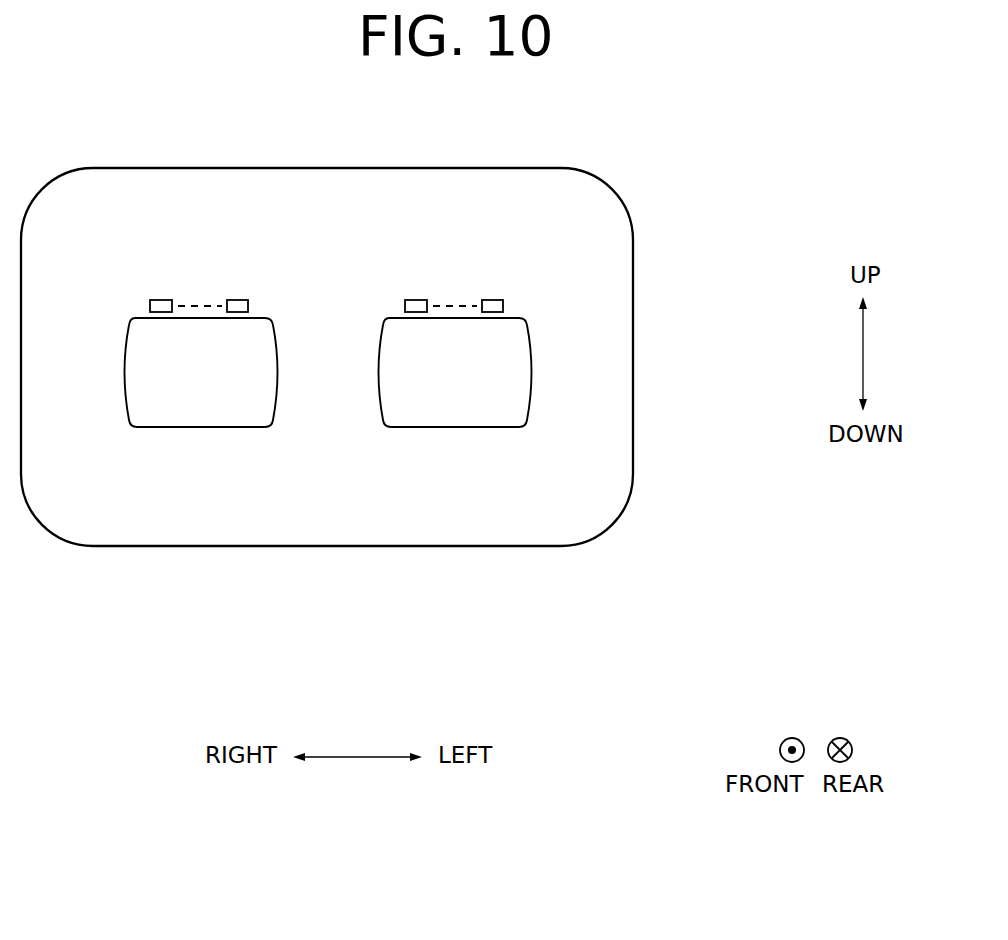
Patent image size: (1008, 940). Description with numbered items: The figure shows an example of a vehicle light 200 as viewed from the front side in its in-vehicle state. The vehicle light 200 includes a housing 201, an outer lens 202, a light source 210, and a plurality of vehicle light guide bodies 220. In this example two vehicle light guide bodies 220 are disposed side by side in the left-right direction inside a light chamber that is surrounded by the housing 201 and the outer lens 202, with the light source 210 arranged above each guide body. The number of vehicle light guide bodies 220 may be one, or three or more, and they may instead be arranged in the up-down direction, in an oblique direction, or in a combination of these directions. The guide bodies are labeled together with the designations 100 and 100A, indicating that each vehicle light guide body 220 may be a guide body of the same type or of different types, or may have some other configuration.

The vehicle light 200 is at (621, 164).
The housing 201 is at (634, 353).
The outer lens 202 is at (614, 490).
The light source 210 is at (238, 300).
The vehicle light guide body 220 is at (175, 432).
The seat device 100 is at (321, 376).
The seat device 100A is at (338, 376).